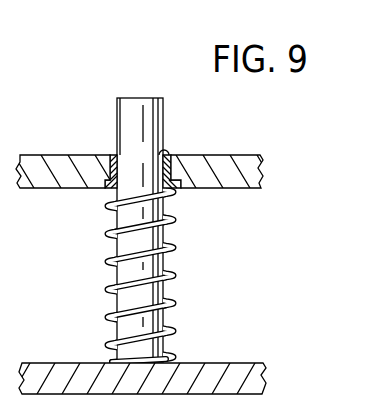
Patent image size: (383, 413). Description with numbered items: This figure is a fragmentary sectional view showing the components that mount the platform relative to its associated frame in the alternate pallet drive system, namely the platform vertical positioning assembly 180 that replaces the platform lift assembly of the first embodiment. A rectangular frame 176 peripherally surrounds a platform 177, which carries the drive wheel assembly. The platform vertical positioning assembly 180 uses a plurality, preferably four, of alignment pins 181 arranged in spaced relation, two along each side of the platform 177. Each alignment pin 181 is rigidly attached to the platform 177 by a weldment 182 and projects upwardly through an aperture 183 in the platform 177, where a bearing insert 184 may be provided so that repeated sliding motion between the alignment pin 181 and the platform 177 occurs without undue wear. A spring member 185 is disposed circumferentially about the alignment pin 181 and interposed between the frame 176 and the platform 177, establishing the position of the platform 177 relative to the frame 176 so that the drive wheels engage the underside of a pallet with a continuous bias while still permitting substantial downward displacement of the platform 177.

The rectangular frame 176 is at (243, 368).
The platform 177 is at (243, 157).
The platform vertical positioning assembly 180 is at (95, 106).
The alignment pin 181 is at (138, 108).
The weldment 182 is at (113, 360).
The aperture 183 is at (164, 155).
The bearing insert 184 is at (116, 155).
The spring member 185 is at (176, 255).